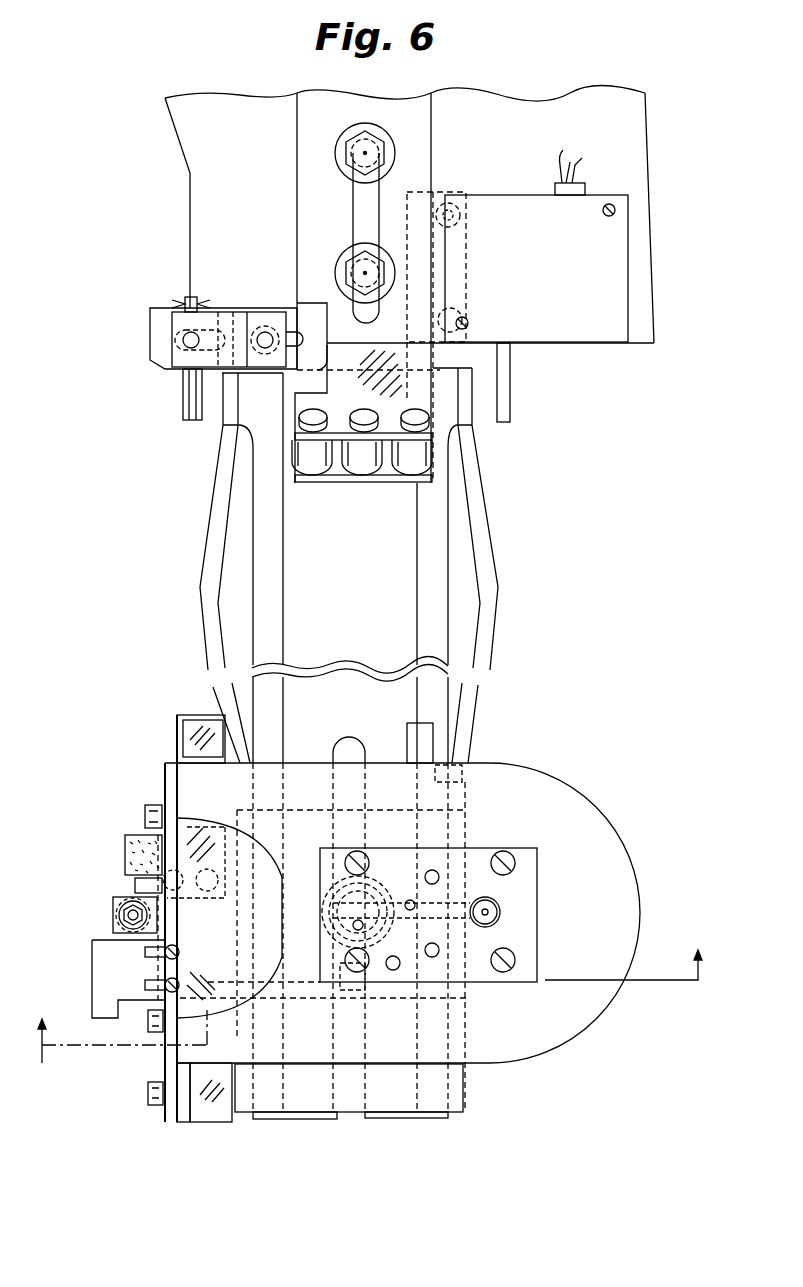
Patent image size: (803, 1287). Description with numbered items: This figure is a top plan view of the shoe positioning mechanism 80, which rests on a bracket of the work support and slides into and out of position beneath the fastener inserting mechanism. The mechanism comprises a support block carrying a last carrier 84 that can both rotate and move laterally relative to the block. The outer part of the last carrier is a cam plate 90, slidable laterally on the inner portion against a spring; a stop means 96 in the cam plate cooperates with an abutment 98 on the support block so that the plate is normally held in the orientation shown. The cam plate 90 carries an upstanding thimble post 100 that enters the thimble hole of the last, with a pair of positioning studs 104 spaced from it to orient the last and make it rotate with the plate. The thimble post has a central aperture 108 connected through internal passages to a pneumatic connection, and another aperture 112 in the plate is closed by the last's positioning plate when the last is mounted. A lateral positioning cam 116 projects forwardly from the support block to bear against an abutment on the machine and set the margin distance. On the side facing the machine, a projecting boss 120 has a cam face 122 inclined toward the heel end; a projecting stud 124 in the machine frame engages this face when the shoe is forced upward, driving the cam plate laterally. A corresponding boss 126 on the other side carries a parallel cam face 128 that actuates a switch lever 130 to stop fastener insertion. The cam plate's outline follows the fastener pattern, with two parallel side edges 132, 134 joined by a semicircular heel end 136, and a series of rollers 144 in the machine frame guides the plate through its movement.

The shoe positioning mechanism 80 is at (370, 922).
The last carrier 84 is at (582, 1057).
The cam plate 90 is at (422, 899).
The stop means 96 is at (135, 886).
The abutment 98 is at (125, 858).
The thimble post 100 is at (524, 912).
The positioning studs 104 is at (430, 945).
The central aperture 108 is at (493, 920).
The aperture 112 is at (410, 900).
The lateral positioning cam 116 is at (422, 725).
The projecting boss 120 is at (181, 721).
The cam face 122 is at (203, 715).
The projecting stud 124 is at (183, 397).
The boss 126 is at (183, 1123).
The cam face 128 is at (213, 1113).
The switch lever 130 is at (510, 386).
The side edge 132 is at (305, 762).
The side edge 134 is at (395, 1064).
The semicircular heel end 136 is at (637, 905).
The rollers 144 is at (320, 470).